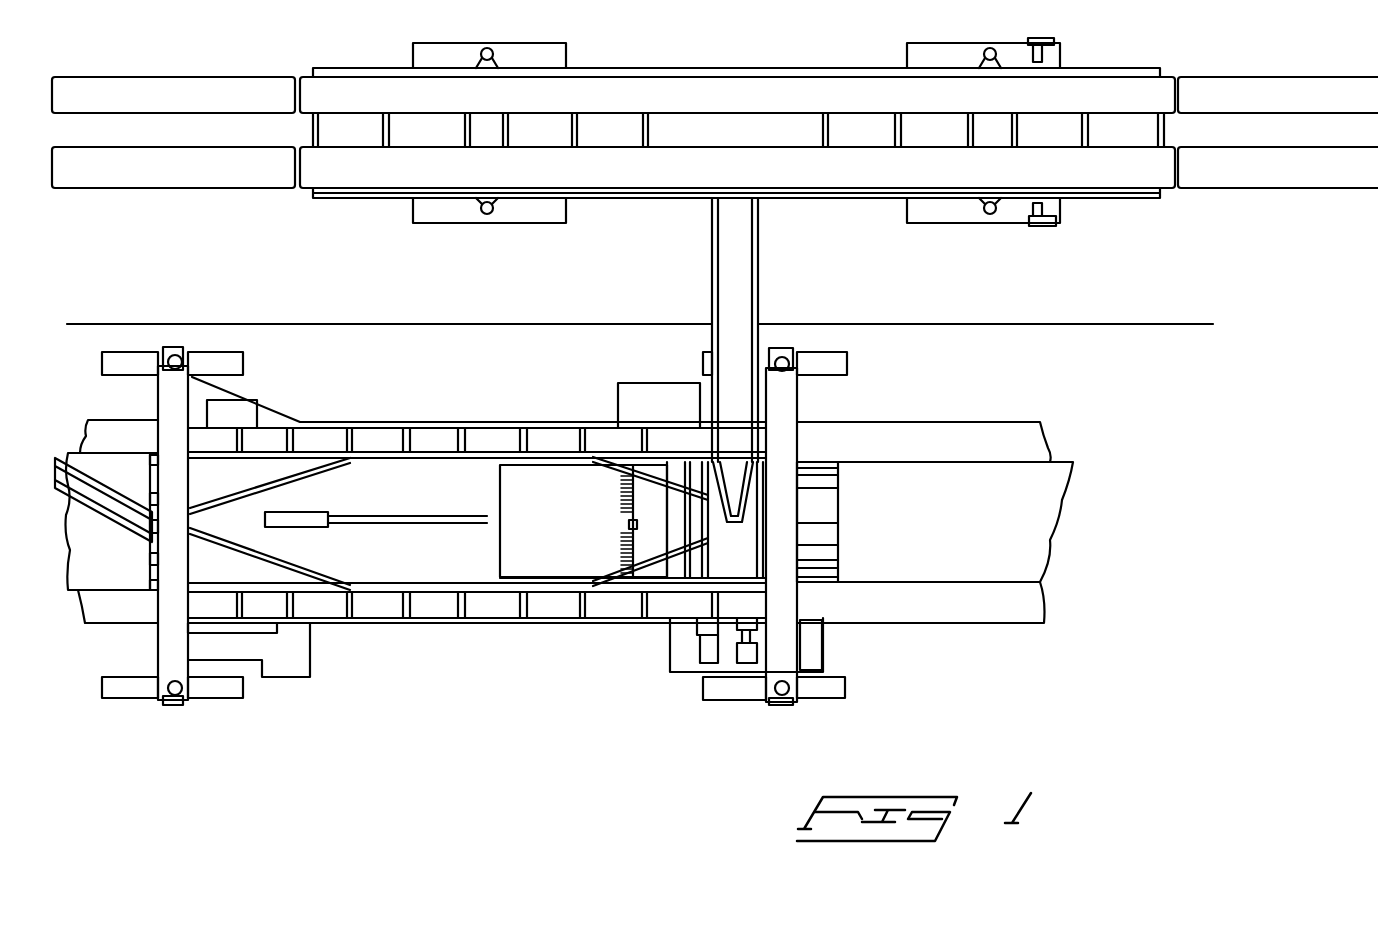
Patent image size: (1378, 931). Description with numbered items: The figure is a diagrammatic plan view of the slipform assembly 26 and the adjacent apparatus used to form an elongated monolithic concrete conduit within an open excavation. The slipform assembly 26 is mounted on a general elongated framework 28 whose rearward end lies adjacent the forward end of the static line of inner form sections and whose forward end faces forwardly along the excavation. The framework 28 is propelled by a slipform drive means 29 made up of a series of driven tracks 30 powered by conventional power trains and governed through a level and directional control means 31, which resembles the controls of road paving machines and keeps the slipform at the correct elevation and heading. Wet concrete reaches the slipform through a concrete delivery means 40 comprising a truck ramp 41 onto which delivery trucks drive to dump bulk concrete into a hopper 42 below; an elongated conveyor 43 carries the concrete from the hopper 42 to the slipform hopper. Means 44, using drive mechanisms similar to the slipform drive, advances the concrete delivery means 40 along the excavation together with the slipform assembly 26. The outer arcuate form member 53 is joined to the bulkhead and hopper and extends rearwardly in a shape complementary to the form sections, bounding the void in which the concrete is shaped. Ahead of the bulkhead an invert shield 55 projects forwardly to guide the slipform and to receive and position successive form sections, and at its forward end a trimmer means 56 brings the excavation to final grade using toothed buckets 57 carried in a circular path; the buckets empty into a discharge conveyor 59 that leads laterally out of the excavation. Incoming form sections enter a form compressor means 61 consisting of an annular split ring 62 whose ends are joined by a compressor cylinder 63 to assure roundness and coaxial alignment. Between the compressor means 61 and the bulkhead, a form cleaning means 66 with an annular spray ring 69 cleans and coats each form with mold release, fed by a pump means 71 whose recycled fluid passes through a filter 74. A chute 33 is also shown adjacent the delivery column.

The slipform assembly 26 is at (820, 520).
The elongated framework 28 is at (525, 420).
The slipform drive means 29 is at (847, 365).
The driven tracks 30 is at (243, 363).
The level and directional control means 31 is at (788, 324).
The chute 33 is at (753, 548).
The concrete delivery means 40 is at (760, 220).
The truck ramp 41 is at (1120, 93).
The hopper 42 is at (820, 143).
The elongated conveyor 43 is at (740, 272).
The means for driving the concrete delivery means 44 is at (1060, 58).
The outer arcuate form member 53 is at (830, 542).
The invert shield 55 is at (412, 567).
The trimmer means 56 is at (148, 556).
The toothed buckets 57 is at (150, 487).
The discharge conveyor 59 is at (128, 526).
The form compressor means 61 is at (619, 488).
The annular split ring 62 is at (619, 545).
The compressor cylinder 63 is at (628, 527).
The form cleaning means 66 is at (690, 533).
The annular spray ring 69 is at (690, 565).
The pump means 71 is at (696, 648).
The filter 74 is at (745, 628).